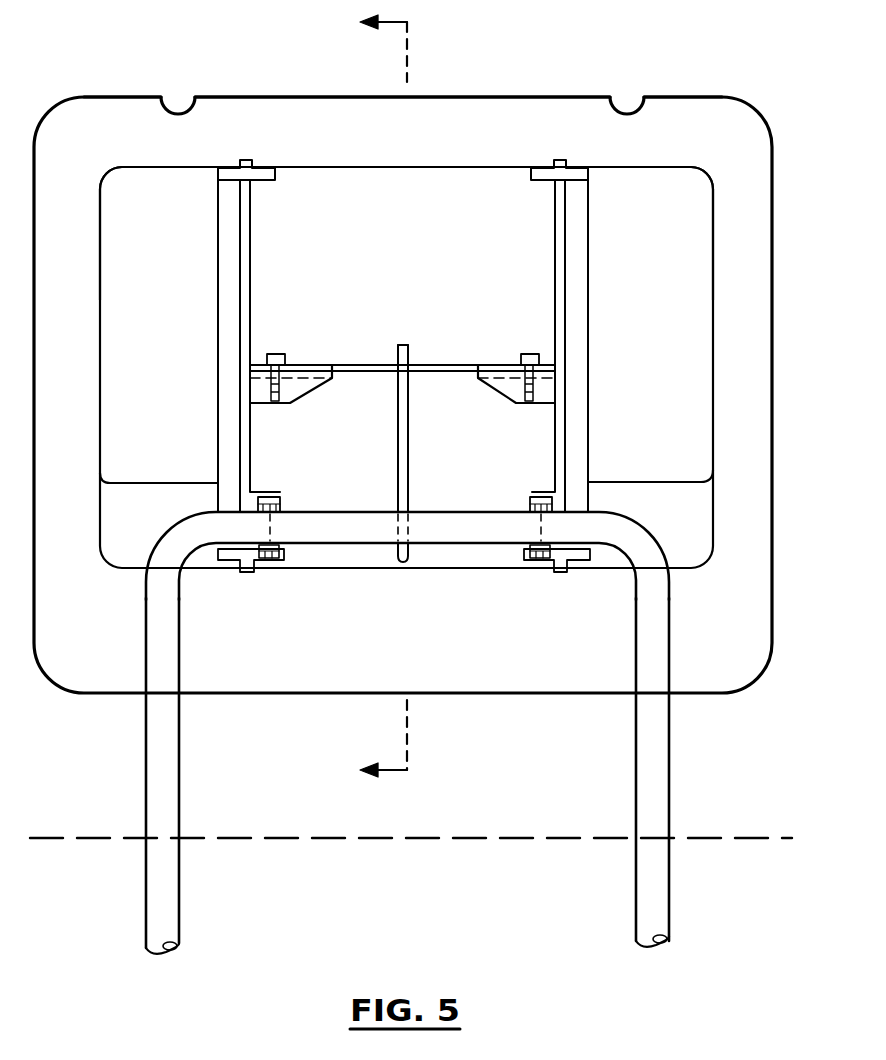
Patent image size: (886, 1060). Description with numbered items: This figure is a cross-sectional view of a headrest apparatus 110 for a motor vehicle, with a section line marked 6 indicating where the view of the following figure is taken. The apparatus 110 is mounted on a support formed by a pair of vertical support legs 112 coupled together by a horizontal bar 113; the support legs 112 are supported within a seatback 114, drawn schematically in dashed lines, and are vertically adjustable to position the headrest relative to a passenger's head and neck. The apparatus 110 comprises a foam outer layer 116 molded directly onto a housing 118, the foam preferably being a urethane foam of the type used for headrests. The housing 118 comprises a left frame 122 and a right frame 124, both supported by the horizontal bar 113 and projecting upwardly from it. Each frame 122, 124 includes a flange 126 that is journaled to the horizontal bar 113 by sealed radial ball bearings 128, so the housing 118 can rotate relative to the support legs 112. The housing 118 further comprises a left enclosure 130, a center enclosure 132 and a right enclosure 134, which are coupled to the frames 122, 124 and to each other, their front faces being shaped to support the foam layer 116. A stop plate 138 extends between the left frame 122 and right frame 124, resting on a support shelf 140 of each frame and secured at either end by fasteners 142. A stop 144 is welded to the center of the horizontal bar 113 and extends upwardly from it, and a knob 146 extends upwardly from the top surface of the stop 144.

The apparatus 110 is at (96, 80).
The vertical support legs 112 is at (180, 770).
The horizontal bar 113 is at (342, 546).
The seatback 114 is at (94, 835).
The foam outer layer 116 is at (212, 117).
The housing 118 is at (300, 168).
The left frame 122 is at (252, 256).
The right frame 124 is at (554, 241).
The flange 126 is at (276, 494).
The sealed radial ball bearings 128 is at (270, 566).
The left enclosure 130 is at (178, 172).
The center enclosure 132 is at (466, 172).
The right enclosure 134 is at (712, 259).
The stop plate 138 is at (318, 364).
The support shelf 140 is at (303, 394).
The fasteners 142 is at (289, 331).
The stop 144 is at (409, 460).
The knob 146 is at (406, 344).
The section line 6- 6 is at (374, 396).